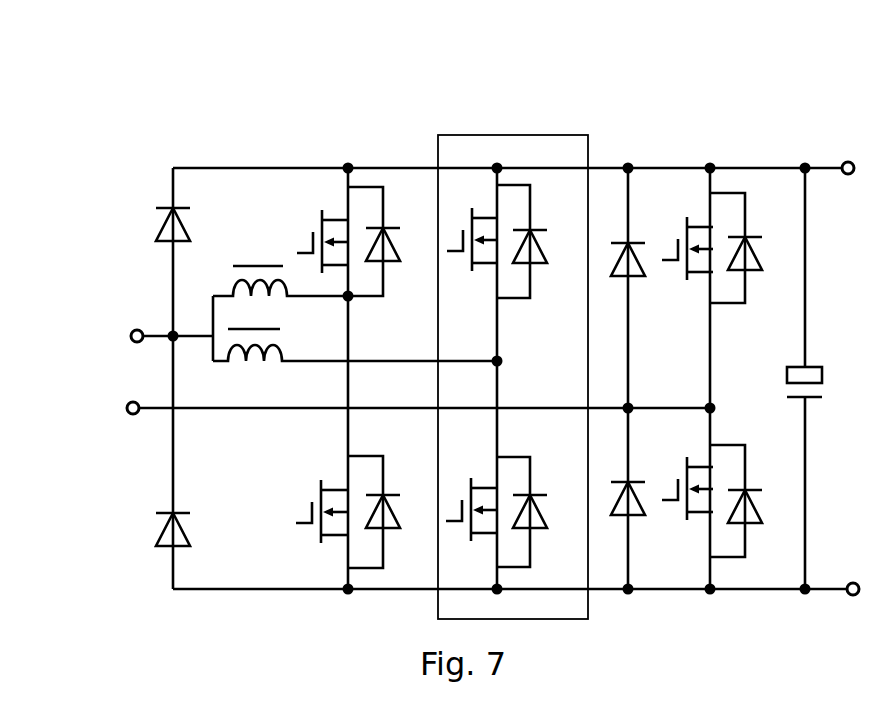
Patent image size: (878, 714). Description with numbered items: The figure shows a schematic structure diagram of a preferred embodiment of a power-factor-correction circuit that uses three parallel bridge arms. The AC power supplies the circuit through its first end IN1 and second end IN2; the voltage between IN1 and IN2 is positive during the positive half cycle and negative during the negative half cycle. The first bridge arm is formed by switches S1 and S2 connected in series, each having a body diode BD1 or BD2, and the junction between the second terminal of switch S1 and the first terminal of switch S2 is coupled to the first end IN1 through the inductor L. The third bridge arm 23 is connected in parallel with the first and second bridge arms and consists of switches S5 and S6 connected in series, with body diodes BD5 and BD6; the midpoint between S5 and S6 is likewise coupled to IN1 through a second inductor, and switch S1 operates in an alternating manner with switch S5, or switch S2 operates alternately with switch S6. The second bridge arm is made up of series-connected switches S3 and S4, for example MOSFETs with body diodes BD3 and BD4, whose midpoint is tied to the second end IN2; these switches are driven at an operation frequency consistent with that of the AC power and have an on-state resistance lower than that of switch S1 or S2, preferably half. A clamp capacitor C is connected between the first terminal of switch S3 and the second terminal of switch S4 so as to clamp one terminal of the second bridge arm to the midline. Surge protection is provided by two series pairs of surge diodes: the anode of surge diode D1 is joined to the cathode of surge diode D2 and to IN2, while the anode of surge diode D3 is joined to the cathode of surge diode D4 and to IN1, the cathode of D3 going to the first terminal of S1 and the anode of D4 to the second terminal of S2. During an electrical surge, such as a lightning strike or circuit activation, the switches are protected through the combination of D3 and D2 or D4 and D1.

The third bridge arm 23 is at (512, 135).
The first end of the AC power IN1 is at (114, 328).
The second end of the AC power IN2 is at (112, 400).
The surge diode D1 is at (620, 247).
The surge diode D2 is at (620, 485).
The surge diode D3 is at (155, 219).
The surge diode D4 is at (155, 526).
The switch S1 is at (320, 240).
The switch S2 is at (316, 511).
The switch S3 is at (685, 248).
The switch S4 is at (684, 488).
The switch S5 is at (472, 231).
The switch S6 is at (471, 501).
The body diode BD1 is at (397, 227).
The body diode BD2 is at (397, 493).
The body diode BD3 is at (759, 242).
The body diode BD4 is at (759, 493).
The body diode BD5 is at (544, 233).
The body diode BD6 is at (544, 497).
The inductor L is at (355, 291).
The clamp capacitor C is at (814, 381).